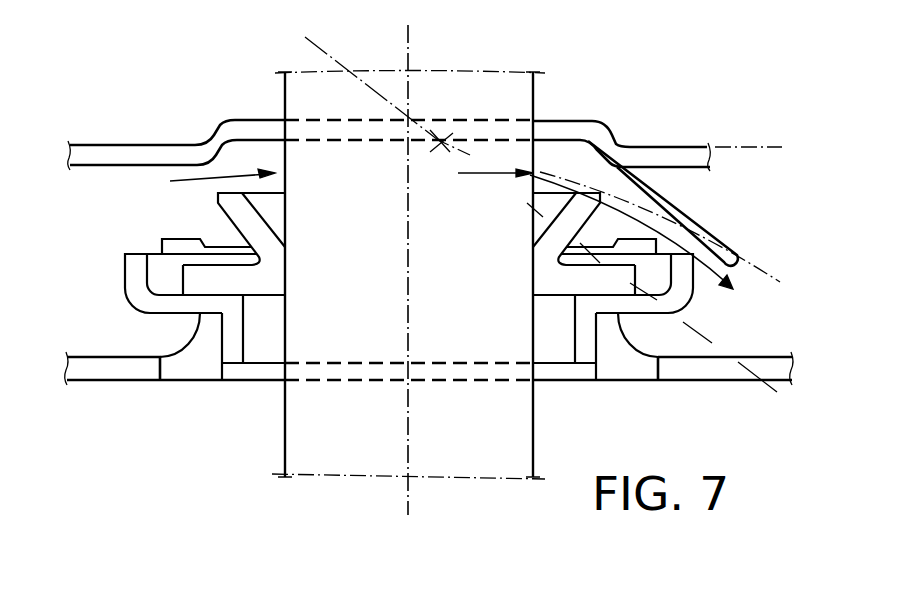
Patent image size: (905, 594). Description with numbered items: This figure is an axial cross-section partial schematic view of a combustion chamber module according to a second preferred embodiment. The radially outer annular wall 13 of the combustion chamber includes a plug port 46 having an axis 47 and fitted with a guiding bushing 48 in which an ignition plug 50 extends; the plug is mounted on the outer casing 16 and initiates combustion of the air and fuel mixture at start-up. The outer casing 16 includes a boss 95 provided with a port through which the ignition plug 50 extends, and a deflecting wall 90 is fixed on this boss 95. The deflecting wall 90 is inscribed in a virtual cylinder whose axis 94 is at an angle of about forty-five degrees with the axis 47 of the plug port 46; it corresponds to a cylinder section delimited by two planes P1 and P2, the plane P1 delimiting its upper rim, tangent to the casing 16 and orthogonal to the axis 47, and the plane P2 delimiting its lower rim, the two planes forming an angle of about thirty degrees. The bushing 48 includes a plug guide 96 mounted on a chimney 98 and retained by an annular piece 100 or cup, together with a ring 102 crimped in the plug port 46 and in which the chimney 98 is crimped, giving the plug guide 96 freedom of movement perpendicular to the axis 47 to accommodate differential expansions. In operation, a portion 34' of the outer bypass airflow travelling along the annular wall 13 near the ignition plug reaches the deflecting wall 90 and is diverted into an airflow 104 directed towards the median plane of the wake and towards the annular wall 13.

The radially outer annular wall 13 is at (113, 381).
The outer casing 16 is at (138, 150).
The portion of the outer bypass airflow 34' is at (296, 186).
The plug port 46 is at (163, 381).
The axis of the plug port 47 is at (412, 38).
The guiding bushing 48 is at (226, 231).
The ignition plug 50 is at (374, 286).
The deflecting wall 90 is at (680, 213).
The axis of the virtual cylinder 94 is at (318, 45).
The boss 95 is at (258, 125).
The plug guide 96 is at (244, 217).
The chimney 98 is at (130, 263).
The annular piece 100 is at (172, 243).
The ring 102 is at (193, 342).
The diverted airflow 104 is at (716, 285).
The first plane P1 is at (742, 147).
The second plane P2 is at (800, 290).